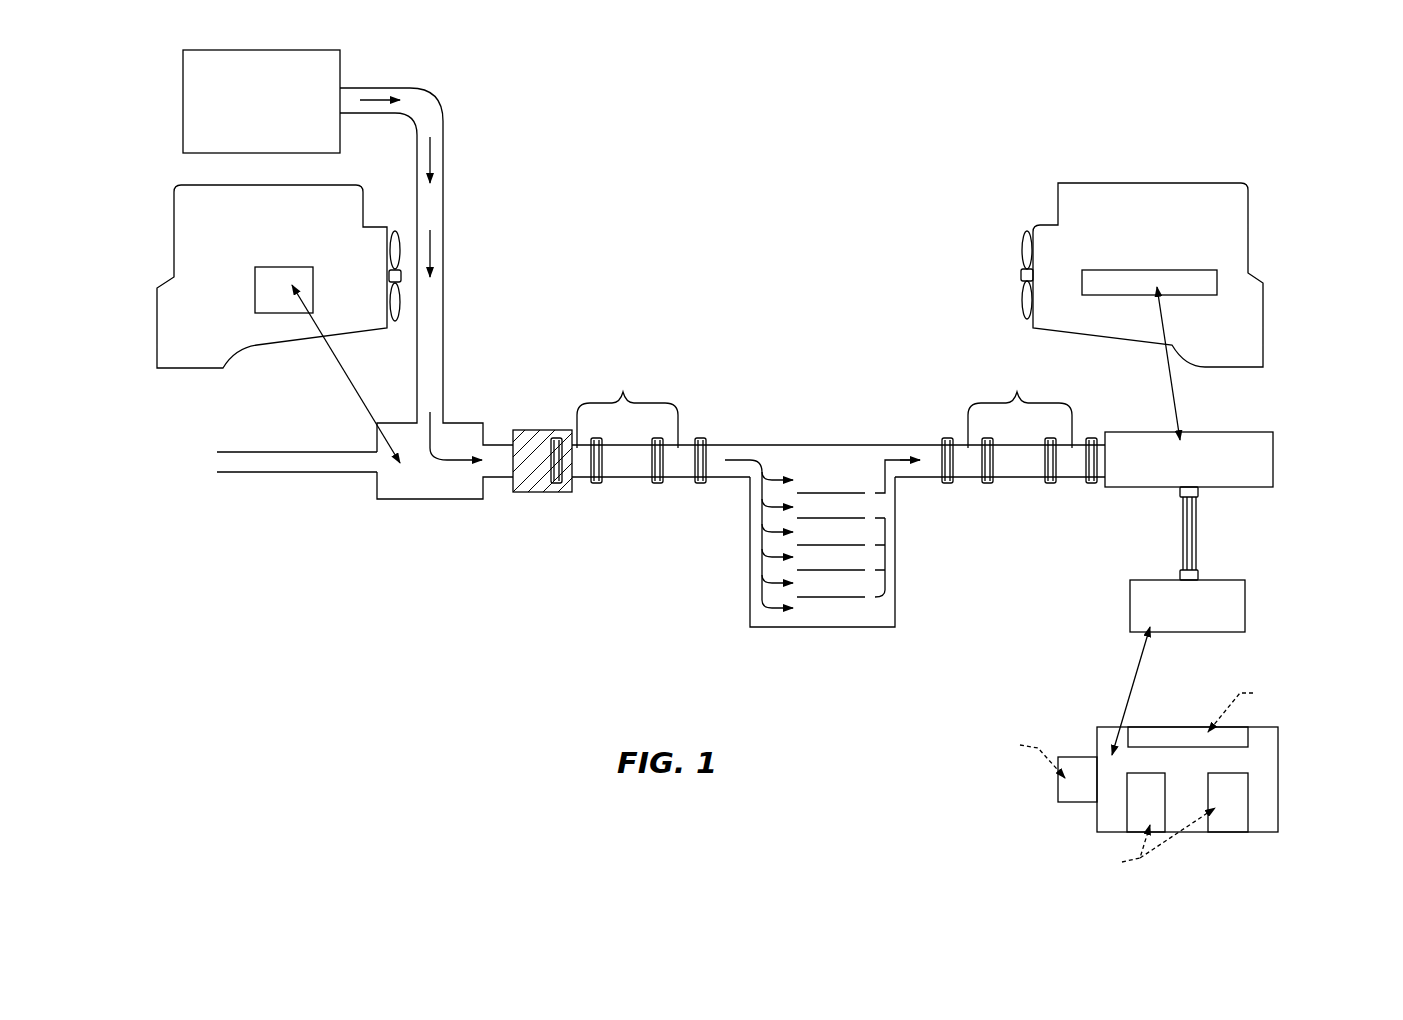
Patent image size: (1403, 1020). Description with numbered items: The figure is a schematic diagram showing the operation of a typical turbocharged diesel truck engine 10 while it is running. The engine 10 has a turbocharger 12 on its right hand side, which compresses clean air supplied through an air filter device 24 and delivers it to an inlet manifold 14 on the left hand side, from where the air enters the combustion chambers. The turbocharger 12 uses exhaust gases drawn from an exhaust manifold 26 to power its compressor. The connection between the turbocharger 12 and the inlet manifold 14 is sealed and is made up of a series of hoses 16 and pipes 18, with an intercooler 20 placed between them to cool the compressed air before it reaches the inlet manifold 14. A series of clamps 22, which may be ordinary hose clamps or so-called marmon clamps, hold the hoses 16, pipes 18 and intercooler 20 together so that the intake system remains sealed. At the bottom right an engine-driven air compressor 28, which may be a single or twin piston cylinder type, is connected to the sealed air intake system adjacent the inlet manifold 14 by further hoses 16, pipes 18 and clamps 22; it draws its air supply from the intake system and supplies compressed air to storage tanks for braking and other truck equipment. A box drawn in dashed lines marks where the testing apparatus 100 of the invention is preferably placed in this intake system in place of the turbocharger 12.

The engine 10 is at (1050, 173).
The turbocharger 12 is at (262, 283).
The inlet manifold 14 is at (1200, 282).
The hoses 16 is at (1310, 533).
The pipes 18 is at (627, 462).
The intercooler 20 is at (827, 627).
The clamps 22 is at (596, 483).
The air filter device 24 is at (197, 65).
The exhaust manifold 26 is at (273, 468).
The air compressor 28 is at (1252, 618).
The testing apparatus 100 is at (533, 497).